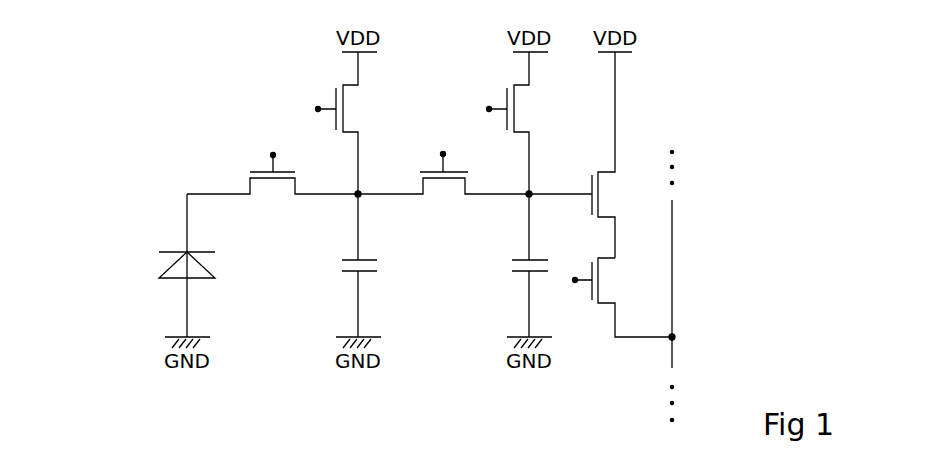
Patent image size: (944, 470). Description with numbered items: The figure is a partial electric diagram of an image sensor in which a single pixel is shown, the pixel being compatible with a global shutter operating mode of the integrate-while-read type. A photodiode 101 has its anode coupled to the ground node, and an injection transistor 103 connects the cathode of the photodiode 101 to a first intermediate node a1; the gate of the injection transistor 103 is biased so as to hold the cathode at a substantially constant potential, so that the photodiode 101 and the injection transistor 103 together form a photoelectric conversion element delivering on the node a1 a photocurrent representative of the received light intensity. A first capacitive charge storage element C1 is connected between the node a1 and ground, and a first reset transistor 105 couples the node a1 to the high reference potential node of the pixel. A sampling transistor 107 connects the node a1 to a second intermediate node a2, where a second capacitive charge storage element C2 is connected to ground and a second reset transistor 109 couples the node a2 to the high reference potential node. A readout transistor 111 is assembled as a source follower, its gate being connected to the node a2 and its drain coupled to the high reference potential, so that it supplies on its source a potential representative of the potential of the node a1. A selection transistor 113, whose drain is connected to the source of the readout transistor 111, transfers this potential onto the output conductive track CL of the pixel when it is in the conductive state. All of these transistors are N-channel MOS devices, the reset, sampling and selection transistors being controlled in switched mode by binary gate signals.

The photodiode 101 is at (170, 268).
The injection transistor 103 is at (260, 170).
The first reset transistor 105 is at (343, 100).
The sampling transistor 107 is at (432, 181).
The second reset transistor 109 is at (514, 100).
The readout transistor 111 is at (598, 190).
The selection transistor 113 is at (598, 282).
The first intermediate node a1 is at (355, 197).
The second intermediate node a2 is at (526, 197).
The first capacitive charge storage element C1 is at (350, 275).
The second capacitive charge storage element C2 is at (522, 275).
The output conductive track CL is at (672, 273).